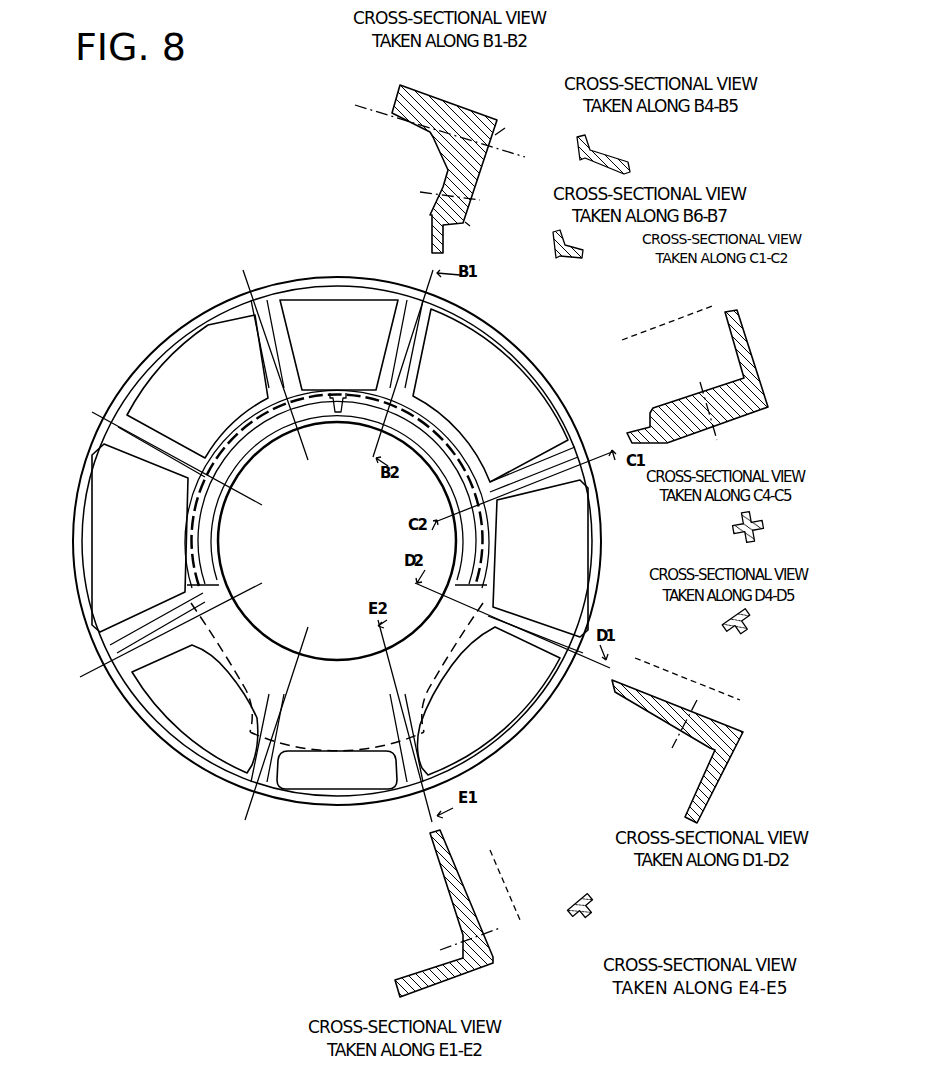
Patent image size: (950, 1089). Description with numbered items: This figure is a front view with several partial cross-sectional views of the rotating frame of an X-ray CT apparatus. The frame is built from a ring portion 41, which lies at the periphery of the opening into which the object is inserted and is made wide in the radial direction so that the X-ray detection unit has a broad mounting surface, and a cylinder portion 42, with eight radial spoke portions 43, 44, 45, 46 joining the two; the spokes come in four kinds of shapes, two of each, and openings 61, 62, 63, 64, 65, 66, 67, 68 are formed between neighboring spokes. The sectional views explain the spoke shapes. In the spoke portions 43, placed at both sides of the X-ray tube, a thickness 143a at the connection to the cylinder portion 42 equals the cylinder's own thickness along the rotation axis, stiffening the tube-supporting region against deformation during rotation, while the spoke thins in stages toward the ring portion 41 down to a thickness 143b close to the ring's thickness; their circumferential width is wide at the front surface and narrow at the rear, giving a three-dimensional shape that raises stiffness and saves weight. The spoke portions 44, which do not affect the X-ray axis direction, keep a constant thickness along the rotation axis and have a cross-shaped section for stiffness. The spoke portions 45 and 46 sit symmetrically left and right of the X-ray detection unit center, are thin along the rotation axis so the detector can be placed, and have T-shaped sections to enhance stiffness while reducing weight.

The ring portion 41 is at (488, 845).
The cylinder portion 42 is at (530, 960).
The spoke portion 43 is at (588, 248).
The spoke portion 44 is at (785, 542).
The spoke portion 45 is at (778, 640).
The spoke portion 46 is at (600, 930).
The opening 61 is at (343, 320).
The opening 62 is at (515, 387).
The opening 63 is at (572, 566).
The opening 64 is at (505, 700).
The opening 65 is at (343, 783).
The opening 66 is at (180, 700).
The opening 67 is at (117, 518).
The opening 68 is at (203, 383).
The thickness 143a is at (505, 135).
The thickness 143b is at (470, 225).